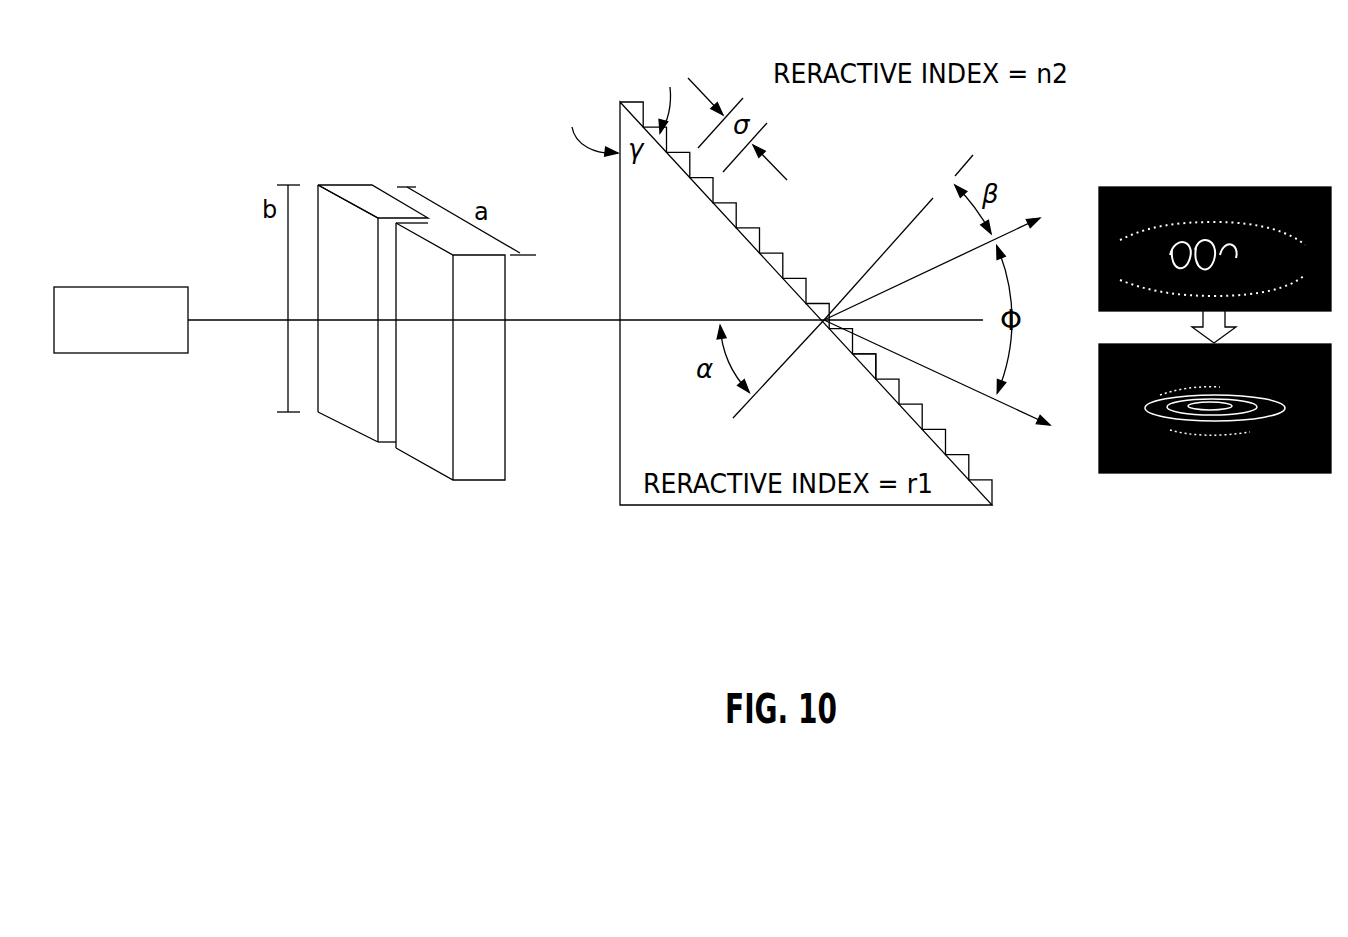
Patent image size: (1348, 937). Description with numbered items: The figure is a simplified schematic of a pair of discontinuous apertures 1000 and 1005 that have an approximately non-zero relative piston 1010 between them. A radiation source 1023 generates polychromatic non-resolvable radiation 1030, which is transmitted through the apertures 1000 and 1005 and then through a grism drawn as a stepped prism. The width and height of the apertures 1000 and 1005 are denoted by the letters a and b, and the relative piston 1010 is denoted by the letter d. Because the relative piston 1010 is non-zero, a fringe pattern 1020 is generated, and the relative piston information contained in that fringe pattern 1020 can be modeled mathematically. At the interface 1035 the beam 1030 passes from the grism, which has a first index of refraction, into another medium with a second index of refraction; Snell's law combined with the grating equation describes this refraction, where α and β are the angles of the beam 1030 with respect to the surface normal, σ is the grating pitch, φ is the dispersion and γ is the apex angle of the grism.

The radiation source 1023 is at (118, 287).
The polychromatic beam 1030 is at (237, 320).
The aperture 1000 is at (337, 427).
The relative piston 1010 is at (386, 450).
The aperture 1005 is at (435, 473).
The fringe pattern 1020 is at (813, 517).
The interface 1035 is at (885, 386).